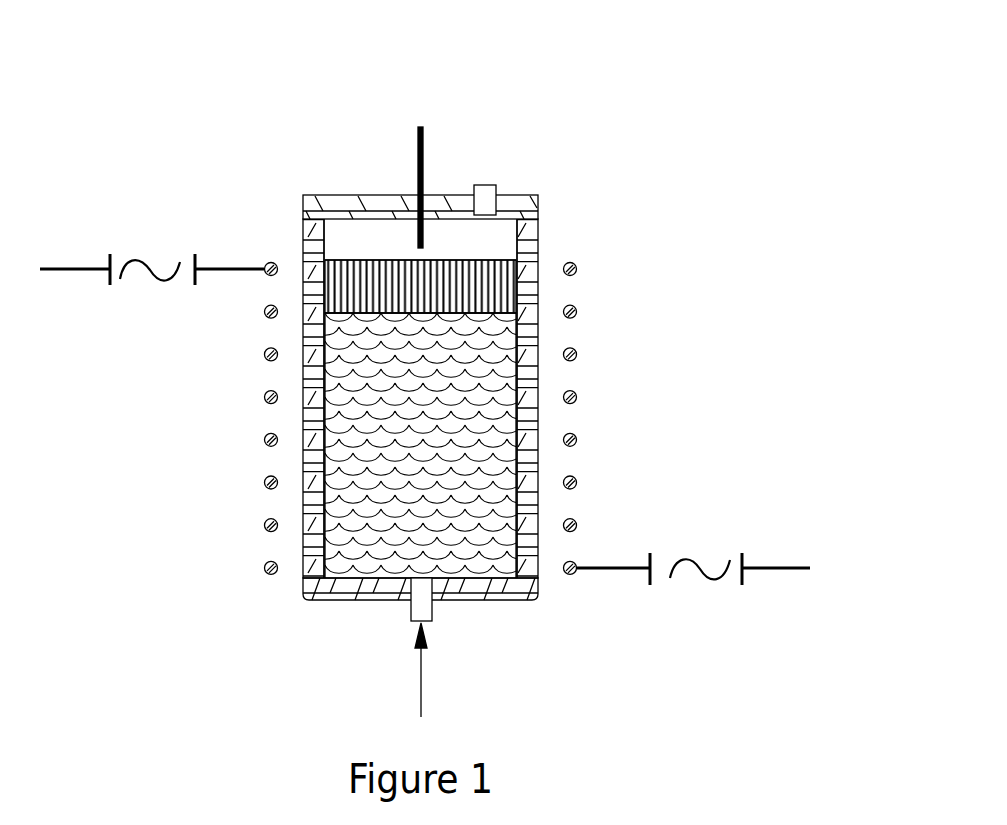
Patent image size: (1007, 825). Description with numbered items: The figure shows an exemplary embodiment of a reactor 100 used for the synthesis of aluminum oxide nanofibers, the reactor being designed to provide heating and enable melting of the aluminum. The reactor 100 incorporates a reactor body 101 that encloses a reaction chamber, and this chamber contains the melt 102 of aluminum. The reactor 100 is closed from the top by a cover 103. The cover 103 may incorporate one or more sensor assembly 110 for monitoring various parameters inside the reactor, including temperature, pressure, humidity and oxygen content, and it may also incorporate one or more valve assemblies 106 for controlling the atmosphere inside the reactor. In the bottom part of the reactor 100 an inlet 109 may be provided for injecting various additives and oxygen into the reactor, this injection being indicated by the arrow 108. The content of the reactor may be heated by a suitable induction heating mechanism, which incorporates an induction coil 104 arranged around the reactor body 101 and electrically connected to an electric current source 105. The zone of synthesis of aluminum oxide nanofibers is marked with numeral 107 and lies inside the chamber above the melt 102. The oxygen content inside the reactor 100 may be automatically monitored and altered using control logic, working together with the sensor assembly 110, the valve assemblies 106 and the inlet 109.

The reactor 100 is at (603, 112).
The reactor body 101 is at (312, 580).
The melt 102 is at (487, 467).
The cover 103 is at (338, 195).
The induction coil 104 is at (260, 523).
The electric current source 105 is at (60, 268).
The valve assembly 106 is at (487, 185).
The zone of synthesis of aluminum oxide nanofibers 107 is at (497, 309).
The injection of additives and oxygen 108 is at (420, 700).
The inlet 109 is at (433, 610).
The sensor assembly 110 is at (424, 126).